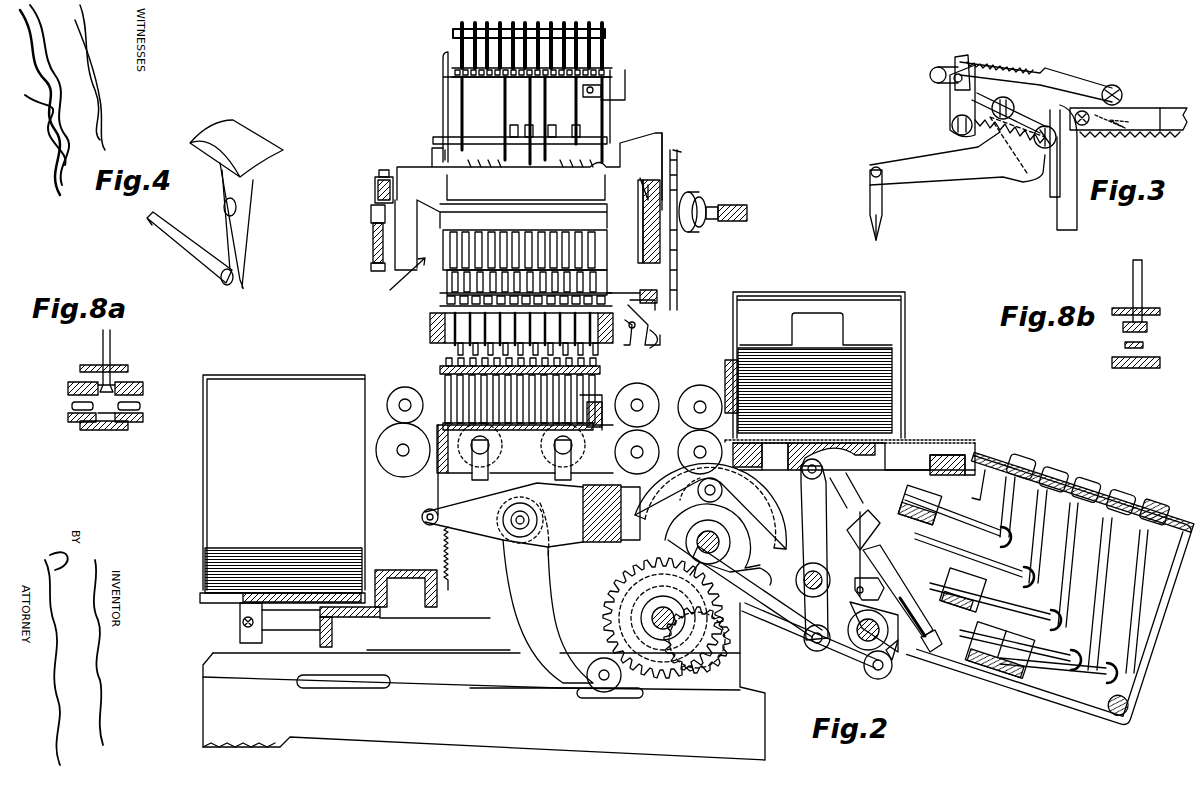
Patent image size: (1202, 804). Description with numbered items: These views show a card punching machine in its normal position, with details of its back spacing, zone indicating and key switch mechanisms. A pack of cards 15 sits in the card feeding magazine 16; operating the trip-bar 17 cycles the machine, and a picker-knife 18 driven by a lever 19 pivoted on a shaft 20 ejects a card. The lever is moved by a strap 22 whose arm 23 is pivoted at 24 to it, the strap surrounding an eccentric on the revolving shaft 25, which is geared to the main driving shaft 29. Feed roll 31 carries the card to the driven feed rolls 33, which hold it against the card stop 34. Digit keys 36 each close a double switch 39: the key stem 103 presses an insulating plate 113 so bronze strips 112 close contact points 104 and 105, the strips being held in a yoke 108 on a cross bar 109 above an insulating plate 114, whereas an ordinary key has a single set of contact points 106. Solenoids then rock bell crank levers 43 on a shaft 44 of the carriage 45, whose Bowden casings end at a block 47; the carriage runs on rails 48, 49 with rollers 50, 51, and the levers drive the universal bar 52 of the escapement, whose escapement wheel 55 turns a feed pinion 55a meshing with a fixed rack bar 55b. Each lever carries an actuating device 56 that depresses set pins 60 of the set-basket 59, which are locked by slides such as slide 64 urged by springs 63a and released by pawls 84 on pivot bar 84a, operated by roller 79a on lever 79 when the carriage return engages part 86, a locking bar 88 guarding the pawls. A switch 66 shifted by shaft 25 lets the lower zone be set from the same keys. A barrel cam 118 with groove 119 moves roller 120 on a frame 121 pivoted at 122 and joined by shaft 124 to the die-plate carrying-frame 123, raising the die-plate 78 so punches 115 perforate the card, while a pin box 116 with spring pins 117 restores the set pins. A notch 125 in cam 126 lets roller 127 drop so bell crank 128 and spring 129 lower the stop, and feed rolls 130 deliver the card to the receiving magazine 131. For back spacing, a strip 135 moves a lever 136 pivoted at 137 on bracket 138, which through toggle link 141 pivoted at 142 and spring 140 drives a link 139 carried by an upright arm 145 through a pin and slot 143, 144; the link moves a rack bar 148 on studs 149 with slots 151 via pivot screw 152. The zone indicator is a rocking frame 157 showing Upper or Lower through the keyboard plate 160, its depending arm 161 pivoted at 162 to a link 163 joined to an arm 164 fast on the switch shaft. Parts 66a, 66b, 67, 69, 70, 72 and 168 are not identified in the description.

In FIG. 2, the card 15 is at (262, 548).
In FIG. 2, the card feeding magazine 16 is at (905, 330).
In FIG. 2, the trip-bar 17 is at (1160, 508).
In FIG. 2, the picker-knife 18 is at (880, 455).
In FIG. 2, the lever 19 is at (820, 500).
In FIG. 2, the shaft 20 is at (828, 578).
In FIG. 2, the strap 22 is at (641, 618).
In FIG. 2, the arm 23 is at (680, 590).
In FIG. 2, the pivot 24 is at (808, 647).
In FIG. 2, the revolving shaft 25 is at (672, 620).
In FIG. 2, the main driving shaft 29 is at (712, 535).
In FIG. 2, the feed roll 31 is at (640, 392).
In FIG. 2, the driven feed rolls 33 is at (445, 385).
In FIG. 2, the card stop 34 is at (438, 497).
In FIG. 2, the digit keys 36 is at (690, 446).
In FIG. 8A, the double switch 39 is at (58, 360).
In FIG. 2, the bell crank lever 43 is at (578, 53).
In FIG. 2, the shaft 44 is at (478, 140).
In FIG. 2, the carriage 45 is at (528, 201).
In FIG. 2, the casing carrying block 47 is at (605, 36).
In FIG. 2, the rail 48 is at (371, 238).
In FIG. 2, the rail 49 is at (643, 243).
In FIG. 2, the anti-friction roller 50 is at (384, 170).
In FIG. 2, the anti-friction roller 51 is at (646, 185).
In FIG. 2, the universal bar 52 is at (443, 88).
In FIG. 2, the escapement wheel 55 is at (680, 162).
In FIG. 2, the feed pinion 55a is at (678, 167).
In FIG. 2, the rack bar 55b is at (677, 250).
In FIG. 2, the actuating device 56 is at (500, 152).
In FIG. 2, the set-basket 59 is at (390, 303).
In FIG. 2, the set pins 60 is at (470, 245).
In FIG. 2, the spring 63a is at (447, 300).
In FIG. 2, the locking slide 64 is at (455, 280).
In FIG. 2, the switch 66 is at (921, 611).
In FIG. 2, the bar end 66a is at (935, 650).
In FIG. 2, the bar edge 66b is at (932, 576).
In FIG. 2, the pinion 67 is at (700, 660).
In FIG. 2, the rod 69 is at (842, 660).
In FIG. 2, the link 70 is at (893, 658).
In FIG. 2, the pivot 72 is at (878, 679).
In FIG. 2, the die-plate 78 is at (508, 435).
In FIG. 2, the lever 79 is at (657, 297).
In FIG. 2, the roller 79a is at (655, 308).
In FIG. 2, the releasing pawl 84 is at (650, 332).
In FIG. 2, the pivot bar 84a is at (630, 345).
In FIG. 2, the part 86 is at (692, 198).
In FIG. 2, the locking bar 88 is at (655, 342).
In FIG. 2, the key stem 103 is at (1143, 558).
In FIG. 8A, the key stem 103 is at (110, 340).
In FIG. 8B, the key stem 103 is at (1133, 292).
In FIG. 8A, the contact points 104 is at (72, 404).
In FIG. 8A, the contact points 105 is at (140, 404).
In FIG. 8B, the single set of contact points 106 is at (1143, 338).
In FIG. 2, the supporting yoke 108 is at (1126, 654).
In FIG. 8A, the supporting yoke 108 is at (133, 355).
In FIG. 8B, the supporting yoke 108 is at (1125, 368).
In FIG. 2, the cross bar 109 is at (990, 668).
In FIG. 2, the bronze strips 112 is at (1045, 676).
In FIG. 8A, the bronze strips 112 is at (68, 384).
In FIG. 8B, the bronze strips 112 is at (1123, 328).
In FIG. 8A, the insulating plate 113 is at (135, 380).
In FIG. 8A, the insulating plate 114 is at (128, 425).
In FIG. 2, the punches 115 is at (604, 386).
In FIG. 2, the pin box 116 is at (424, 331).
In FIG. 2, the spring elevated pins 117 is at (470, 354).
In FIG. 2, the barrel cam 118 is at (760, 510).
In FIG. 2, the cam groove 119 is at (762, 578).
In FIG. 2, the roller 120 is at (704, 500).
In FIG. 2, the frame 121 is at (568, 538).
In FIG. 2, the pivot 122 is at (583, 523).
In FIG. 2, the die-plate carrying-frame 123 is at (500, 483).
In FIG. 2, the shaft 124 is at (511, 520).
In FIG. 2, the notch 125 is at (683, 665).
In FIG. 2, the cam 126 is at (628, 698).
In FIG. 2, the roller 127 is at (600, 692).
In FIG. 2, the bell crank 128 is at (548, 593).
In FIG. 2, the spring 129 is at (446, 553).
In FIG. 2, the feed rolls 130 is at (385, 440).
In FIG. 2, the receiving magazine 131 is at (284, 482).
In FIG. 3, the metal arm 135 is at (882, 195).
In FIG. 3, the lever 136 is at (957, 158).
In FIG. 3, the pivot 137 is at (1045, 126).
In FIG. 3, the fixed bracket 138 is at (1040, 170).
In FIG. 3, the link 139 is at (1072, 88).
In FIG. 3, the spring 140 is at (1000, 56).
In FIG. 3, the toggle link 141 is at (995, 97).
In FIG. 3, the pivot 142 is at (1005, 120).
In FIG. 3, the pin 143 is at (952, 62).
In FIG. 3, the slot 144 is at (930, 77).
In FIG. 3, the upright arm 145 is at (950, 103).
In FIG. 3, the rack bar 148 is at (1178, 110).
In FIG. 3, the studs 149 is at (1165, 112).
In FIG. 3, the slots 151 is at (1112, 110).
In FIG. 3, the pivot screw 152 is at (1112, 85).
In FIG. 4, the rocking frame 157 is at (253, 190).
In FIG. 2, the keyboard plate 160 is at (988, 457).
In FIG. 4, the depending arm 161 is at (240, 245).
In FIG. 4, the pivot 162 is at (225, 285).
In FIG. 2, the link 163 is at (858, 588).
In FIG. 4, the link 163 is at (178, 250).
In FIG. 2, the arm 164 is at (858, 626).
In FIG. 2, the knob 168 is at (730, 205).